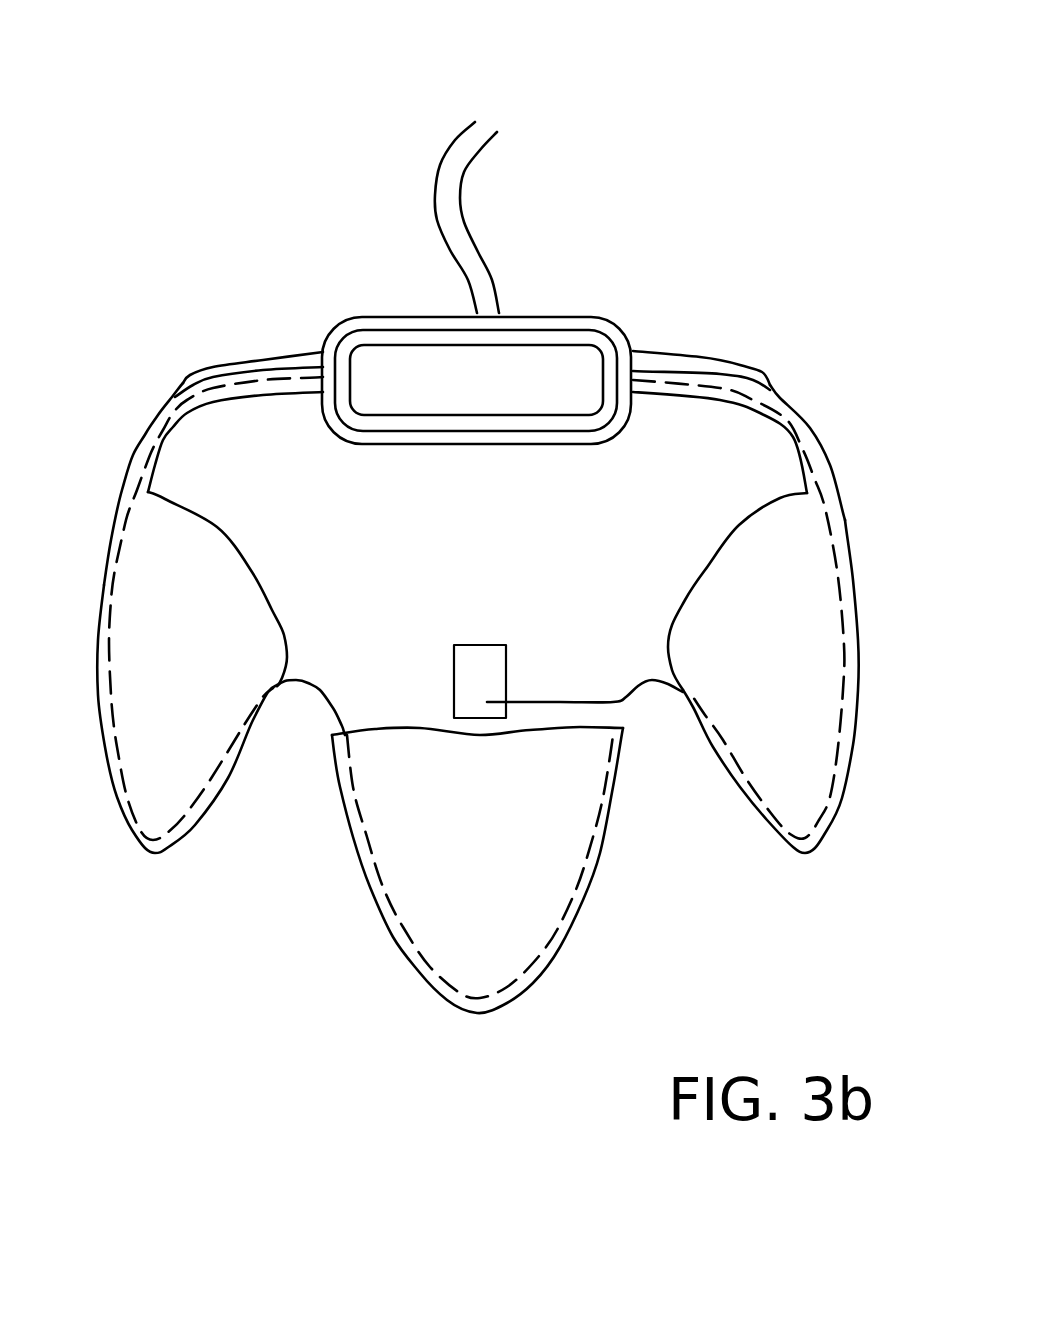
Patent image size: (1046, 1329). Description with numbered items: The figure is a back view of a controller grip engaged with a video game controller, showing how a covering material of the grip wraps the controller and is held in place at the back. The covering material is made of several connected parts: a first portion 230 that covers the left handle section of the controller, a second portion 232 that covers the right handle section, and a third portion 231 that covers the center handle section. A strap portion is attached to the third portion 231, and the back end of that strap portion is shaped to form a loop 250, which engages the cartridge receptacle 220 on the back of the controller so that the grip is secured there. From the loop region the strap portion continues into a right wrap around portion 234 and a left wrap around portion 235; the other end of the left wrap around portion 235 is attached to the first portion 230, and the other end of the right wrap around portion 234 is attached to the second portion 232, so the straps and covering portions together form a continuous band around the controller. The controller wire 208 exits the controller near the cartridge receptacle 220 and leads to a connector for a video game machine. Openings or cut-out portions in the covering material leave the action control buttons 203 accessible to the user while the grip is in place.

The action control buttons 203 is at (270, 373).
The controller wire 208 is at (473, 150).
The cartridge receptacle 220 is at (533, 353).
The first portion 230 is at (780, 603).
The third portion 231 is at (520, 927).
The second portion 232 is at (170, 753).
The right wrap around portion 234 is at (167, 440).
The left wrap around portion 235 is at (773, 420).
The loop 250 is at (617, 338).